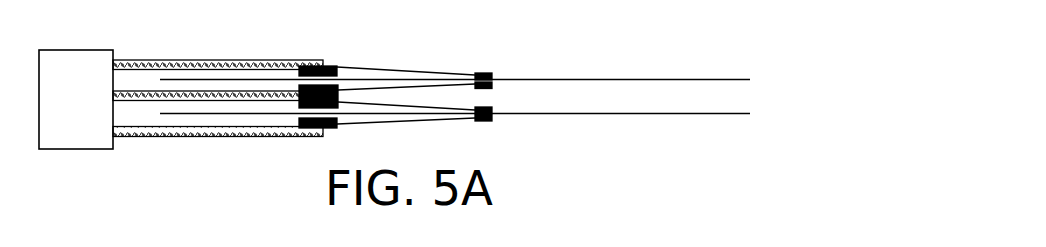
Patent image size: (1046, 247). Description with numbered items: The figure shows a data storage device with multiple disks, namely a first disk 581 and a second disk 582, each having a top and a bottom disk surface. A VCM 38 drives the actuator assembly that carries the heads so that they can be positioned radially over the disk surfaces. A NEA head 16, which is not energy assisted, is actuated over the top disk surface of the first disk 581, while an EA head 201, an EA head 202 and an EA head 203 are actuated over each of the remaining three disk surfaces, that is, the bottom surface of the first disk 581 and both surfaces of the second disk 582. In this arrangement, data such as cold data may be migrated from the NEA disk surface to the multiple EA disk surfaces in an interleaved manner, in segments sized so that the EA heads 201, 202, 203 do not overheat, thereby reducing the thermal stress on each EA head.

The VCM 38 is at (78, 50).
The NEA head 16 is at (500, 67).
The EA head 201 is at (503, 88).
The EA head 202 is at (503, 108).
The EA head 203 is at (498, 130).
The disk 581 is at (645, 79).
The disk 582 is at (645, 114).